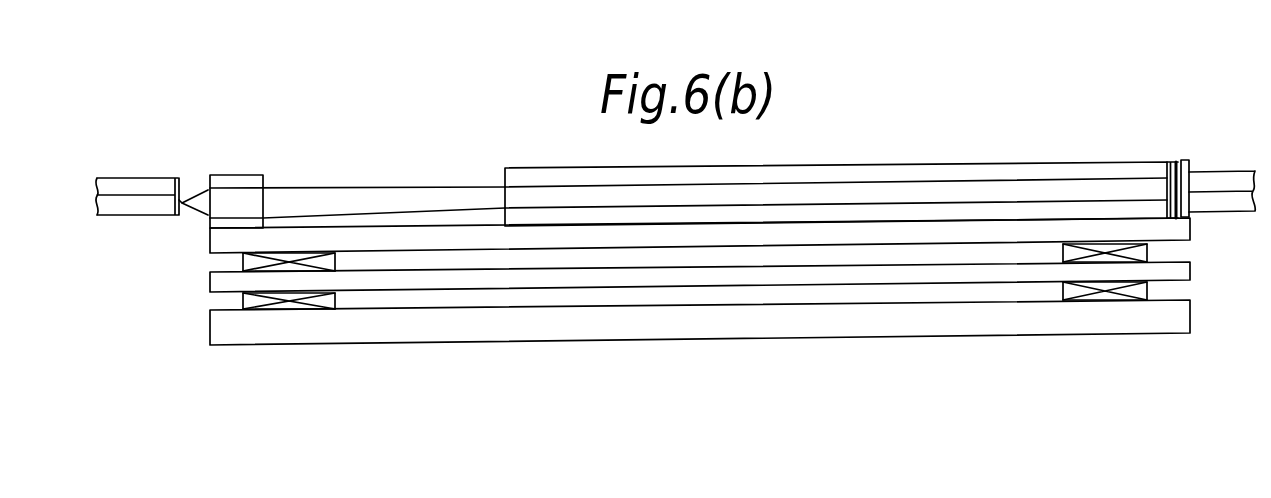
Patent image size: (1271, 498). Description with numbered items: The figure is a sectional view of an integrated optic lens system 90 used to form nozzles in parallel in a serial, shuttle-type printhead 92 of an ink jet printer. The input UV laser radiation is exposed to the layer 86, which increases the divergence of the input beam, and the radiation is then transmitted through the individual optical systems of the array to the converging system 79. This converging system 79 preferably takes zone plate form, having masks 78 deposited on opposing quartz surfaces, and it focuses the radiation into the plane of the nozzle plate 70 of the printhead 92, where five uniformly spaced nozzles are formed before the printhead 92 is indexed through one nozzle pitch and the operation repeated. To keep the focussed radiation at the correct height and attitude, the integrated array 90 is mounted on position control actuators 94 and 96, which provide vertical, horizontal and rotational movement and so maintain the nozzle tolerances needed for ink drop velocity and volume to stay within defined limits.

The printhead 92 is at (120, 218).
The nozzle plate 70 is at (181, 217).
The converging system 79 is at (242, 175).
The mask 78 is at (267, 203).
The integrated optic lens system 90 is at (997, 162).
The layer 86 is at (1178, 160).
The position control actuator 94 is at (242, 262).
The position control actuator 96 is at (243, 297).